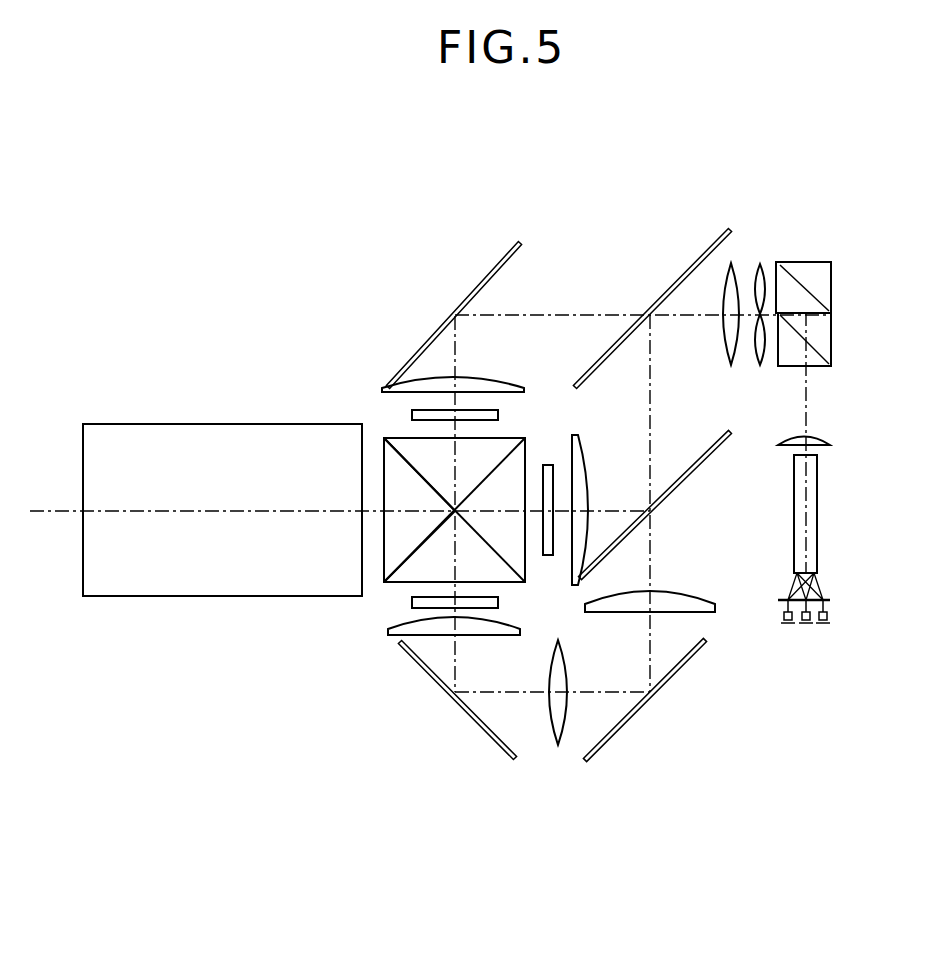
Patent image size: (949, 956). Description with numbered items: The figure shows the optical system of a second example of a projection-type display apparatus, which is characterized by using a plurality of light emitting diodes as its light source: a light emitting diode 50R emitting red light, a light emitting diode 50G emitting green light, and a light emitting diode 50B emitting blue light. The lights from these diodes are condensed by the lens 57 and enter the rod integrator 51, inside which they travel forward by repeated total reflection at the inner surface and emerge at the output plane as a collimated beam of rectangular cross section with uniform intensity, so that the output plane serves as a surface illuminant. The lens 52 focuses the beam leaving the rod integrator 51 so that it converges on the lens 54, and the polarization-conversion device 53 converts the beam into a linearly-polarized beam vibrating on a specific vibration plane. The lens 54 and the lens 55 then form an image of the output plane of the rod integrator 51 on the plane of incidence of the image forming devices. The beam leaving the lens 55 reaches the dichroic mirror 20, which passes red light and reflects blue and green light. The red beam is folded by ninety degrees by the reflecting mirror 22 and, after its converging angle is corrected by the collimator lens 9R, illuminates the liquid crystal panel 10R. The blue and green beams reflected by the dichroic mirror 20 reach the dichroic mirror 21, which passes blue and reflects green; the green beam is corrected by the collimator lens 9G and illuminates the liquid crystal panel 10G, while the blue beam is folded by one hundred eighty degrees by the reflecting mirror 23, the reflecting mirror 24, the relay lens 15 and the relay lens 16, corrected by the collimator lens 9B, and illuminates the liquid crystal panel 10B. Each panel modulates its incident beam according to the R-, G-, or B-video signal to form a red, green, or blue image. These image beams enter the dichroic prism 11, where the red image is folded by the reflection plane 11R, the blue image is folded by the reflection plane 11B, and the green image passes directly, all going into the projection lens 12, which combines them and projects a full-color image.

The projection lens 12 is at (165, 424).
The dichroic prism 11 is at (480, 565).
The reflection plane 11B is at (420, 480).
The reflection plane 11R is at (420, 548).
The liquid crystal panel 10R is at (412, 413).
The liquid crystal panel 10G is at (548, 462).
The liquid crystal panel 10B is at (412, 605).
The collimator lens 9R is at (495, 377).
The collimator lens 9G is at (585, 458).
The collimator lens 9B is at (485, 630).
The reflecting mirror 22 is at (497, 262).
The dichroic mirror 20 is at (670, 285).
The dichroic mirror 21 is at (703, 455).
The reflecting mirror 24 is at (435, 680).
The reflecting mirror 23 is at (637, 710).
The relay lens 15 is at (690, 593).
The relay lens 16 is at (558, 745).
The lens 55 is at (730, 262).
The lens 54 is at (760, 262).
The polarization-conversion device 53 is at (832, 308).
The lens 52 is at (828, 440).
The rod integrator 51 is at (817, 512).
The lens 57 is at (830, 593).
The light emitting diode 50R is at (788, 625).
The light emitting diode 50G is at (806, 625).
The light emitting diode 50B is at (822, 625).